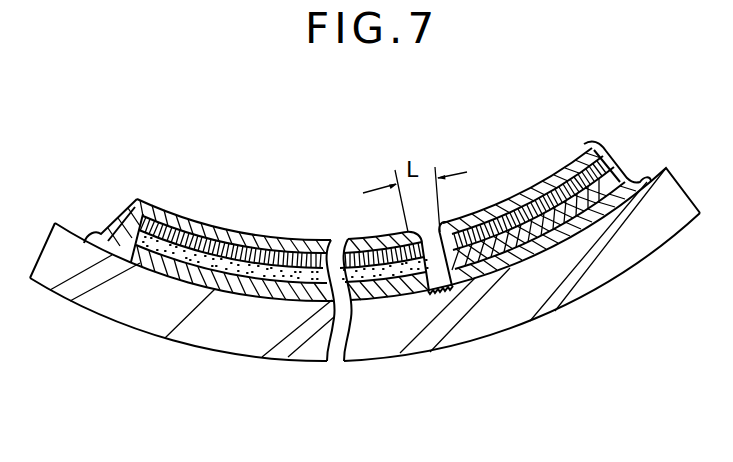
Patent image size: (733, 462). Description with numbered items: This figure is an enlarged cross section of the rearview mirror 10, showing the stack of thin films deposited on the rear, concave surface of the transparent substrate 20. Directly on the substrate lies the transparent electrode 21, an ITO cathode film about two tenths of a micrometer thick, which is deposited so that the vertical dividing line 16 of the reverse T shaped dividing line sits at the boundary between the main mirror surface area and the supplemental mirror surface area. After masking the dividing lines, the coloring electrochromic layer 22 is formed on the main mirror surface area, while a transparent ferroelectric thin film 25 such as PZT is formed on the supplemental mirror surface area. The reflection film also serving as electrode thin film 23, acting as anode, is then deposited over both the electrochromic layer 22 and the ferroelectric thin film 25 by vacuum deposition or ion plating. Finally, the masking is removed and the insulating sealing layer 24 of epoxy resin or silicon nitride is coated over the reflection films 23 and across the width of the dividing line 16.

The mirror 10 is at (182, 358).
The vertical dividing line 16 is at (435, 287).
The transparent substrate 20 is at (630, 257).
The transparent electrode 21 is at (108, 232).
The electrochromic layer 22 is at (182, 246).
The reflection film also serving as electrode thin film 23 is at (268, 236).
The insulating sealing layer 24 is at (595, 157).
The transparent ferroelectric thin film 25 is at (513, 242).